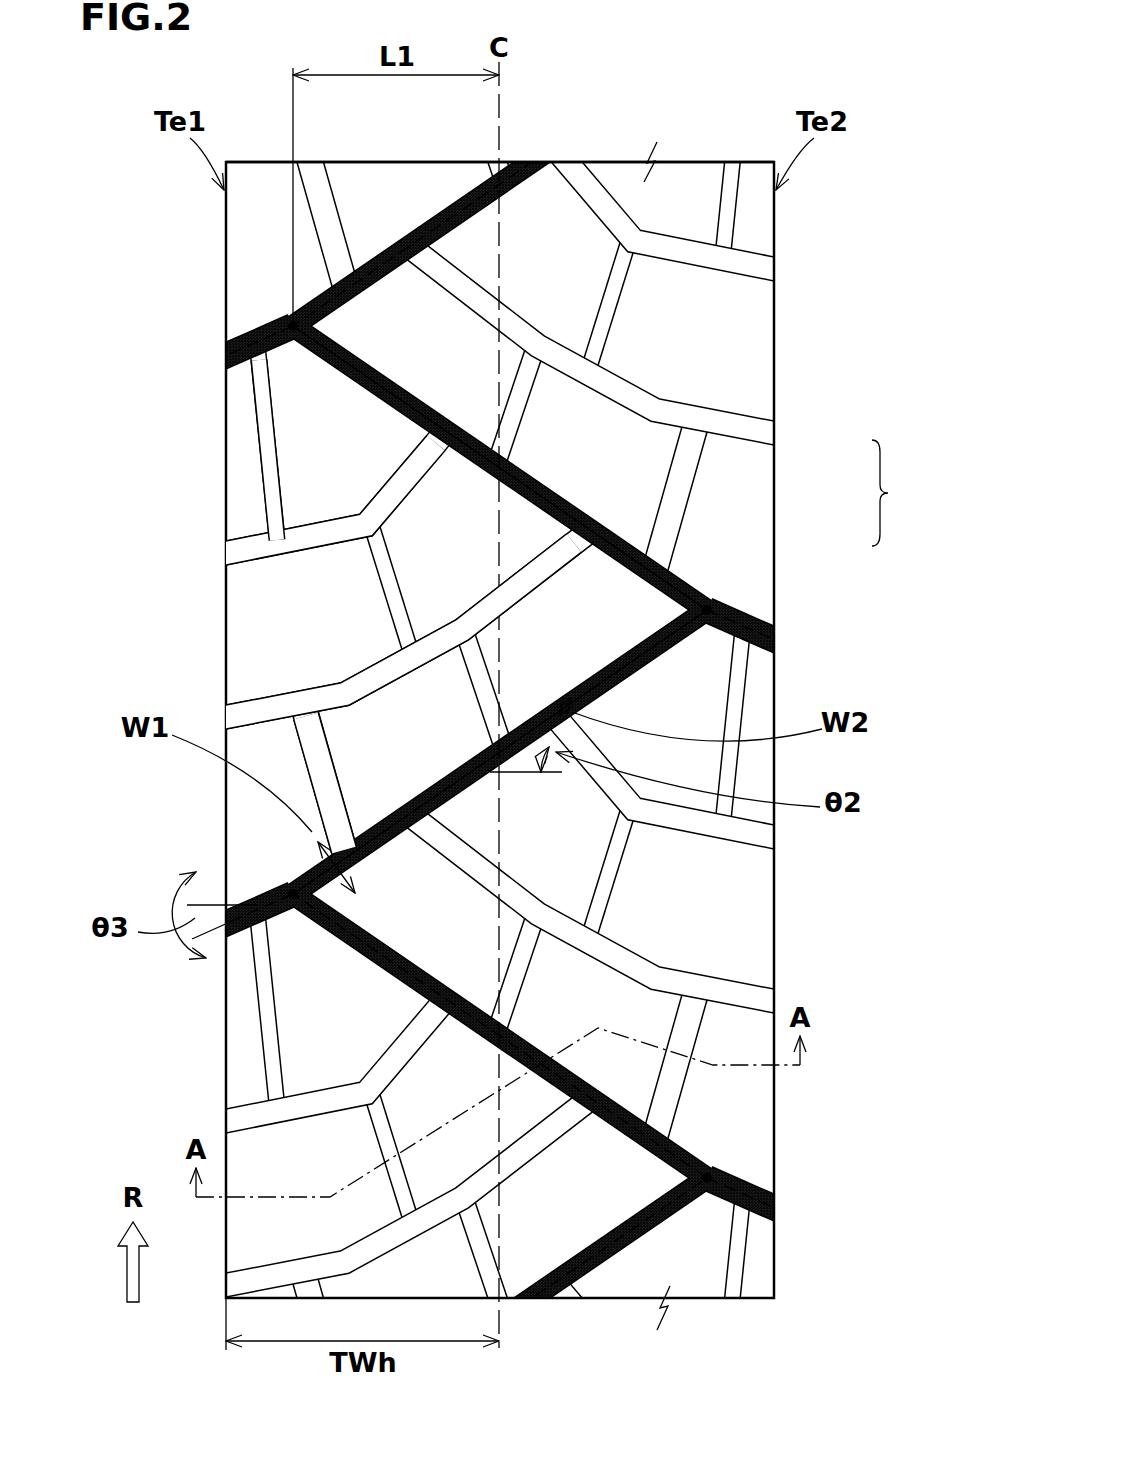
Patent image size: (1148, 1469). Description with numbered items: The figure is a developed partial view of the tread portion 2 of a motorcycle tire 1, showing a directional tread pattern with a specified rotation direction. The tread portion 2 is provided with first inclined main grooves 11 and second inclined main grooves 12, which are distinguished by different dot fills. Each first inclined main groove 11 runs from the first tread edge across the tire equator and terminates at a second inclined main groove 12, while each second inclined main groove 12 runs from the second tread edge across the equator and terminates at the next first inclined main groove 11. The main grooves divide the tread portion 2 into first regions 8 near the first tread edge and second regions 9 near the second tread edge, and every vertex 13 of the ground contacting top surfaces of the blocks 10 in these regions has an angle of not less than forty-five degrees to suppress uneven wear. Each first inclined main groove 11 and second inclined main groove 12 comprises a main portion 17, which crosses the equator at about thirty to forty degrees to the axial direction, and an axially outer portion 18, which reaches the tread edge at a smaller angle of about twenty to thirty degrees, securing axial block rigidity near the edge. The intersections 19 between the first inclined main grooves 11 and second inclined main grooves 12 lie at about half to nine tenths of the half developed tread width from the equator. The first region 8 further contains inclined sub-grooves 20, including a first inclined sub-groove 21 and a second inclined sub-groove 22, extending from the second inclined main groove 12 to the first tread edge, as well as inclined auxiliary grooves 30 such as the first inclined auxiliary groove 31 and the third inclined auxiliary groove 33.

The motorcycle tire 1 is at (687, 136).
The tread portion 2 is at (580, 150).
The first region 8 is at (360, 590).
The second region 9 is at (668, 326).
The block 10 is at (333, 424).
The first inclined main groove 11 is at (367, 268).
The second inclined main groove 12 is at (170, 1022).
The vertex 13 is at (550, 528).
The main portion 17 is at (598, 521).
The axially outer portion 18 is at (285, 322).
The intersection 19 is at (256, 336).
The inclined sub-groove 20 is at (322, 570).
The first inclined sub-groove 21 is at (330, 526).
The second inclined sub-groove 22 is at (380, 667).
The inclined auxiliary groove 30 is at (207, 605).
The first inclined auxiliary groove 31 is at (258, 430).
The third inclined auxiliary groove 33 is at (318, 756).